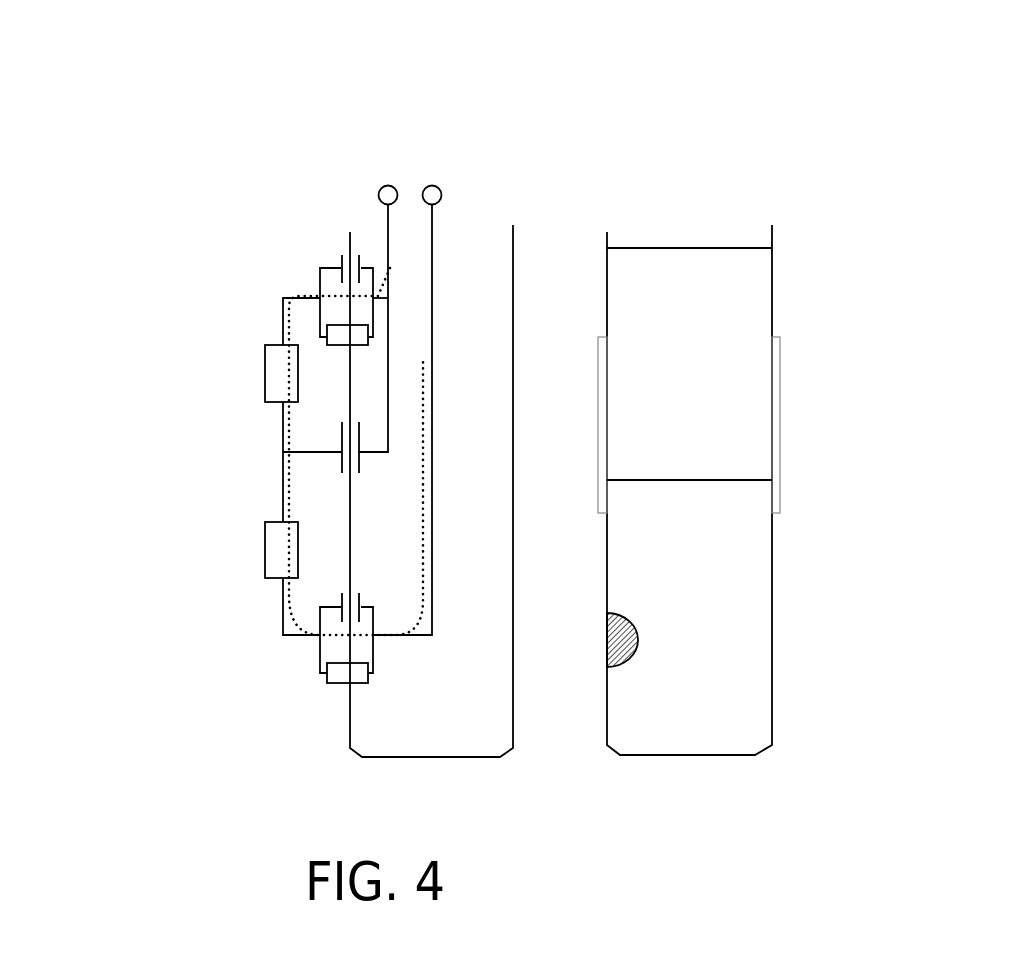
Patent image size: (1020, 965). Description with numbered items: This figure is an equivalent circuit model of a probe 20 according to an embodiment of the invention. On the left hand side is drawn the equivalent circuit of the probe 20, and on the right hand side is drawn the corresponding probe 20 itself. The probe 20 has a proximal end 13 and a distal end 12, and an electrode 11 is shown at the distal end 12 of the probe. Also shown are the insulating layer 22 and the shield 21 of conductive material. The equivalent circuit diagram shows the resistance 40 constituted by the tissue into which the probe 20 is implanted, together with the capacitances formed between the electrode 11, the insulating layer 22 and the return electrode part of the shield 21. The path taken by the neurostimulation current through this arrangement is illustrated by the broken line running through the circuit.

The probe 20 is at (622, 185).
The proximal end 13 is at (787, 267).
The distal end 12 is at (793, 705).
The shield 21 is at (597, 277).
The insulating layer 22 is at (600, 455).
The resistance 40 is at (252, 372).
The electrode 11 is at (600, 652).